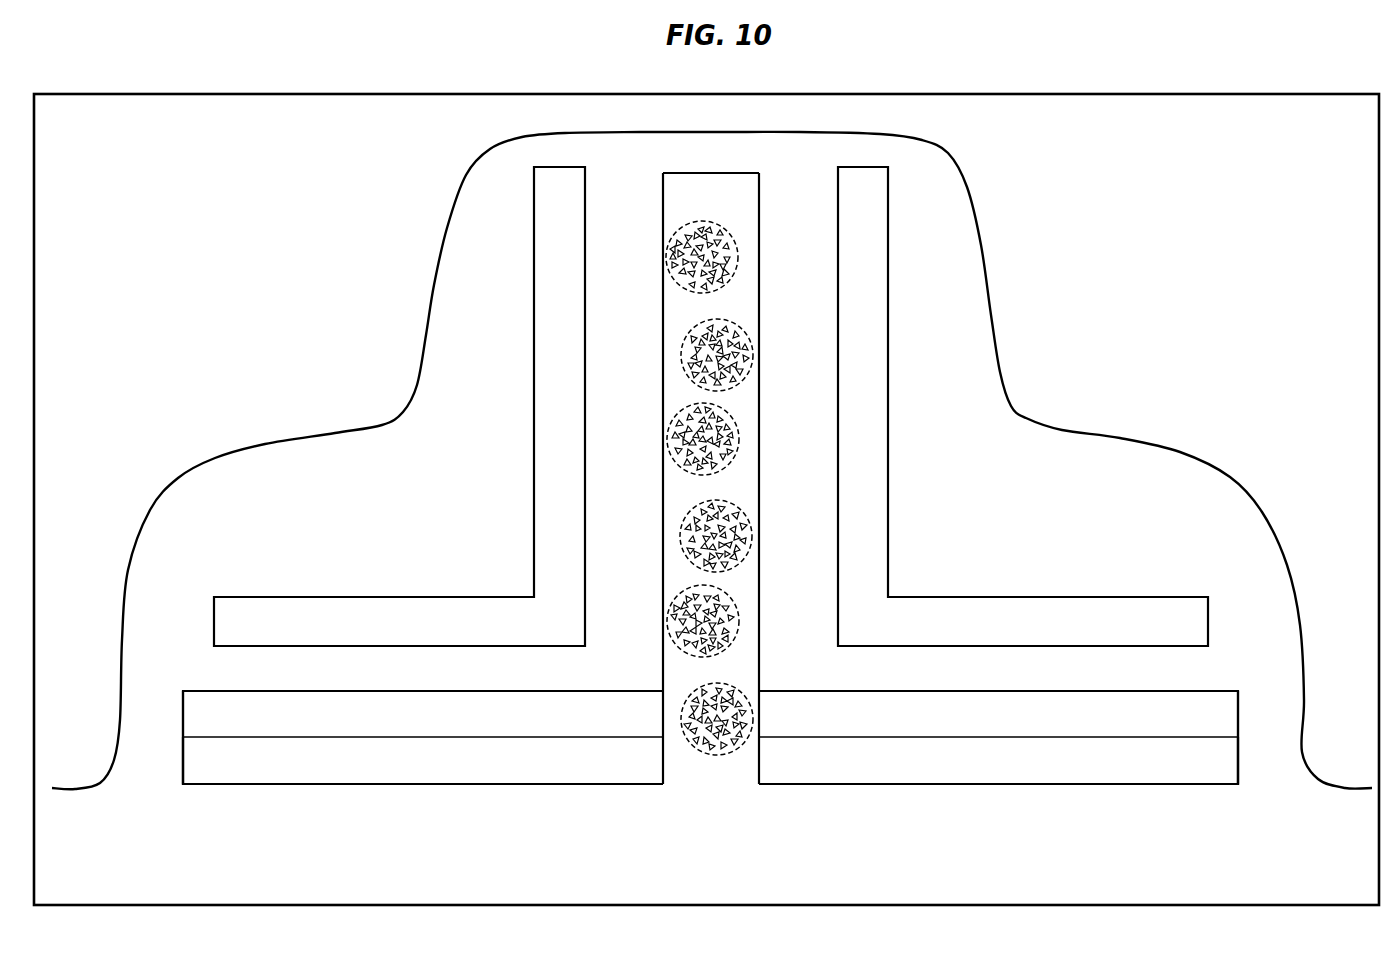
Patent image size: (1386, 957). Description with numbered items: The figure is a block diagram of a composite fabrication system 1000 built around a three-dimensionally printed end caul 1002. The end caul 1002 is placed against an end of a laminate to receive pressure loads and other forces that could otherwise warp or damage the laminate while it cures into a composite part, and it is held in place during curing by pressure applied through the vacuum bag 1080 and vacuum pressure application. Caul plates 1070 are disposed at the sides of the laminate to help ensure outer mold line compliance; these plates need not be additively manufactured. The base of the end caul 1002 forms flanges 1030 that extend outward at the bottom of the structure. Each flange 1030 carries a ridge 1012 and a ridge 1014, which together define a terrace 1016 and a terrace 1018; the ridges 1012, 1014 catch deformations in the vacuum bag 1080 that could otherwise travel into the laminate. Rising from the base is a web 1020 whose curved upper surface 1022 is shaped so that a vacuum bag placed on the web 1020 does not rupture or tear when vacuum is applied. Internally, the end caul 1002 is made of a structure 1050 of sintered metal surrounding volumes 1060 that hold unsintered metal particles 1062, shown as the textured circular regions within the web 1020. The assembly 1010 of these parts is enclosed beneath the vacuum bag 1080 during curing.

The composite fabrication system 1000 is at (745, 879).
The end caul 1002 is at (1038, 820).
The composite layup 1010 is at (350, 836).
The ridge 1012 is at (597, 680).
The ridge 1014 is at (561, 727).
The terrace 1016 is at (312, 691).
The terrace 1018 is at (375, 737).
The web 1020 is at (760, 252).
The curved upper surface 1022 is at (746, 190).
The flange 1030 is at (210, 665).
The structure of sintered metal 1050 is at (735, 487).
The volume of unsintered metal particles 1060 is at (744, 333).
The unsintered metal particles 1062 is at (671, 332).
The caul plate 1070 is at (534, 298).
The vacuum bag 1080 is at (1007, 373).